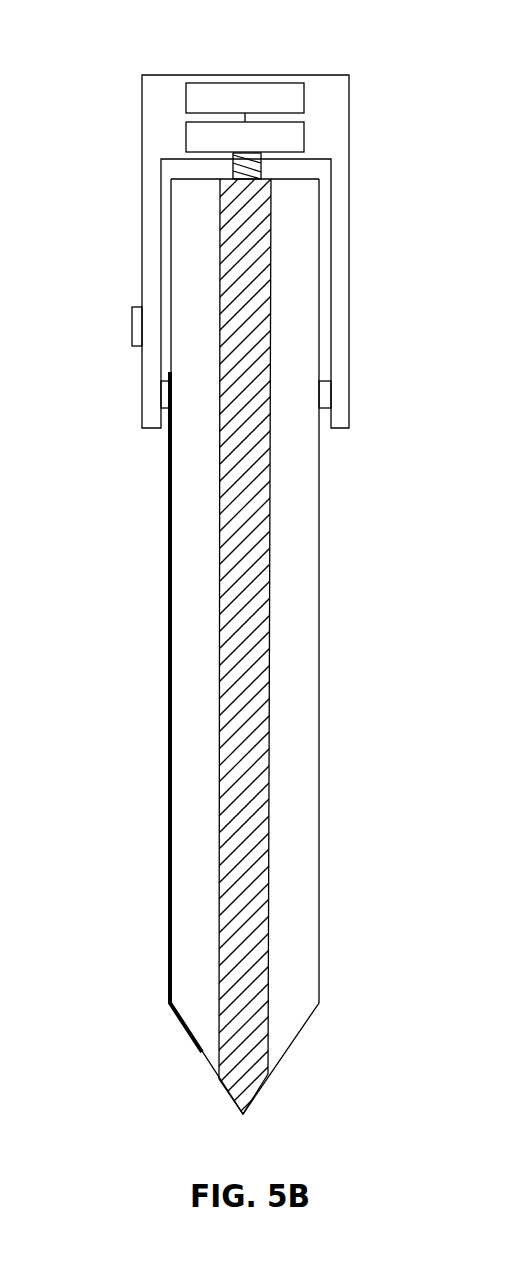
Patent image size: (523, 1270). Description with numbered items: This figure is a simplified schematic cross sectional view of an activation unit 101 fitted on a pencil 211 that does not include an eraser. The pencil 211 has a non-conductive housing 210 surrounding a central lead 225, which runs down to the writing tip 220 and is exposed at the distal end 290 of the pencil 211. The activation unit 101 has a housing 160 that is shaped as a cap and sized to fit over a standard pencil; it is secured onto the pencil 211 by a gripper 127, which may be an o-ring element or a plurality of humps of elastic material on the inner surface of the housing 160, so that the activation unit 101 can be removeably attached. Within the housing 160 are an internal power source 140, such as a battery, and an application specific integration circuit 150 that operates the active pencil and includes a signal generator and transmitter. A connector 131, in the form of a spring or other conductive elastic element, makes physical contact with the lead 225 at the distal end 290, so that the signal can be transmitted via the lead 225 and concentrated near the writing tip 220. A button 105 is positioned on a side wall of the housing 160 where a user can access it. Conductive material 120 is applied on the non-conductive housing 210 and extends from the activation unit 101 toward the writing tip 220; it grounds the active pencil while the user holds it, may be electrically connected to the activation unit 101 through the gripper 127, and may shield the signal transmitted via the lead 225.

The activation unit 101 is at (106, 85).
The button 105 is at (134, 332).
The conductive material 120 is at (168, 832).
The gripper 127 is at (330, 394).
The connector 131 is at (233, 175).
The internal power source 140 is at (248, 82).
The application specific integration circuit 150 is at (303, 137).
The housing 160 is at (345, 313).
The non-conductive housing 210 is at (302, 526).
The pencil 211 is at (331, 621).
The writing tip 220 is at (242, 1096).
The lead 225 is at (220, 630).
The distal end 290 is at (195, 179).